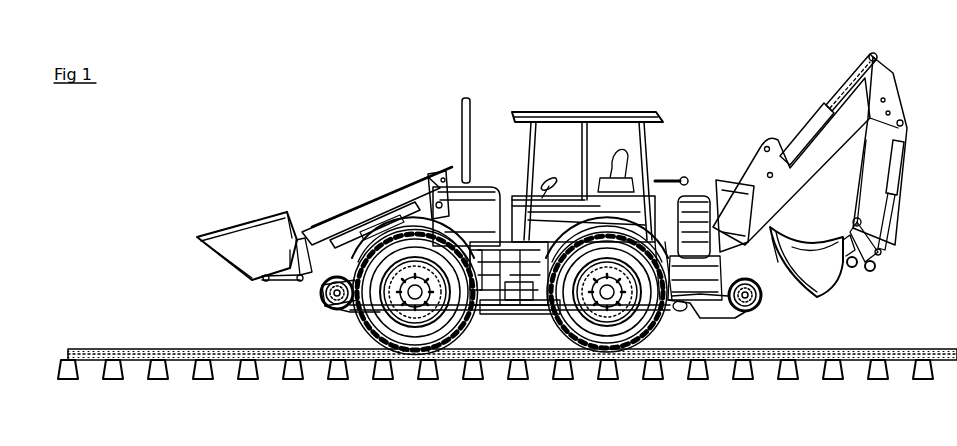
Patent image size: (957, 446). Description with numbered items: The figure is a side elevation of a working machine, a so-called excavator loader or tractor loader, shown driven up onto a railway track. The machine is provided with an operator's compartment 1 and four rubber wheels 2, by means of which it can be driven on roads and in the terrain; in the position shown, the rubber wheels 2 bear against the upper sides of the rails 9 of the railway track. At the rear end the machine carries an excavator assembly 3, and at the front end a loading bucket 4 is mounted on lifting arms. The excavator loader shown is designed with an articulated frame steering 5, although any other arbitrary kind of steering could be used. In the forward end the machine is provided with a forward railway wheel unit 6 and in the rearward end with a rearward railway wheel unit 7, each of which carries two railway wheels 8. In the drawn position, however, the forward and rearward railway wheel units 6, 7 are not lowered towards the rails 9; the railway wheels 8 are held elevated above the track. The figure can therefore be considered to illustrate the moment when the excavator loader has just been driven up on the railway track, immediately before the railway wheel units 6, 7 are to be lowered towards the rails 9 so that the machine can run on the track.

The operator's compartment 1 is at (579, 103).
The rubber wheels 2 is at (414, 336).
The excavator assembly 3 is at (786, 121).
The loading bucket 4 is at (265, 233).
The articulated frame steering 5 is at (516, 326).
The forward railway wheel unit 6 is at (318, 313).
The rearward railway wheel unit 7 is at (737, 322).
The railway wheels 8 is at (321, 293).
The rails 9 is at (842, 355).